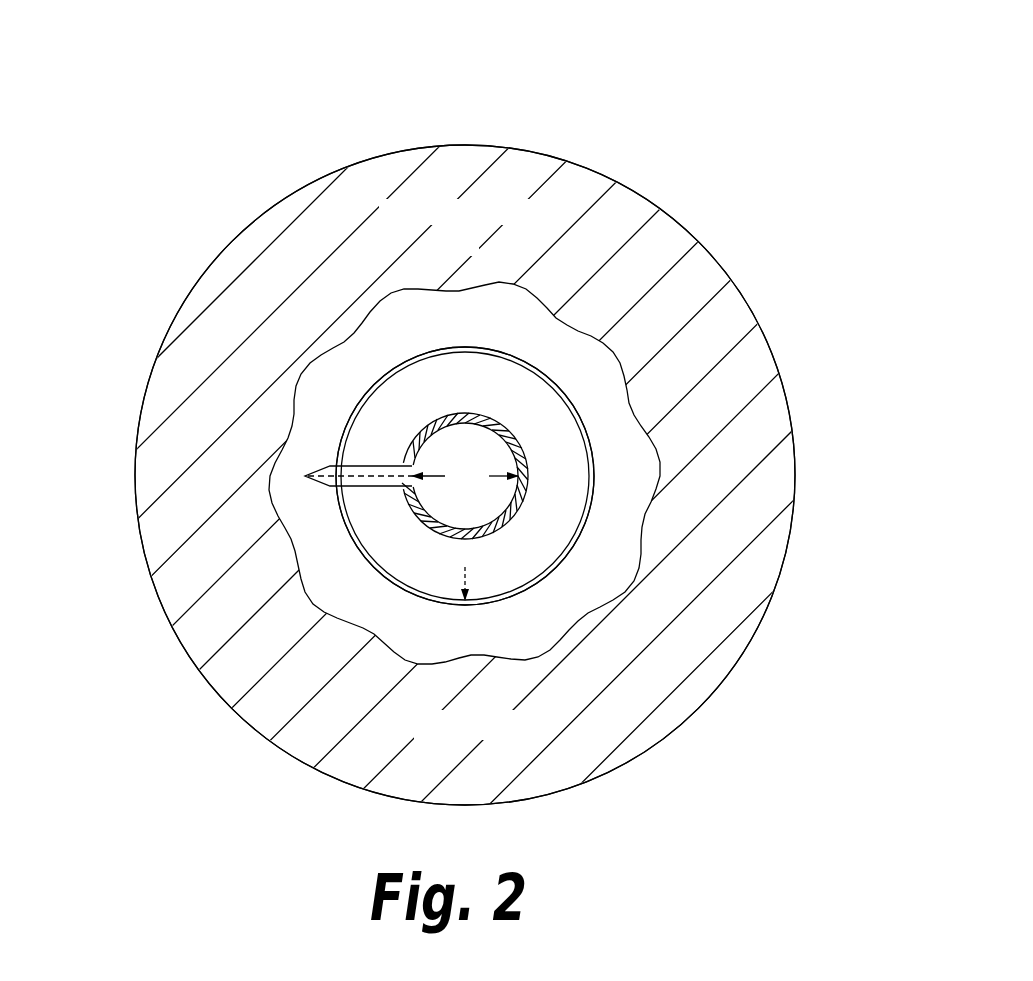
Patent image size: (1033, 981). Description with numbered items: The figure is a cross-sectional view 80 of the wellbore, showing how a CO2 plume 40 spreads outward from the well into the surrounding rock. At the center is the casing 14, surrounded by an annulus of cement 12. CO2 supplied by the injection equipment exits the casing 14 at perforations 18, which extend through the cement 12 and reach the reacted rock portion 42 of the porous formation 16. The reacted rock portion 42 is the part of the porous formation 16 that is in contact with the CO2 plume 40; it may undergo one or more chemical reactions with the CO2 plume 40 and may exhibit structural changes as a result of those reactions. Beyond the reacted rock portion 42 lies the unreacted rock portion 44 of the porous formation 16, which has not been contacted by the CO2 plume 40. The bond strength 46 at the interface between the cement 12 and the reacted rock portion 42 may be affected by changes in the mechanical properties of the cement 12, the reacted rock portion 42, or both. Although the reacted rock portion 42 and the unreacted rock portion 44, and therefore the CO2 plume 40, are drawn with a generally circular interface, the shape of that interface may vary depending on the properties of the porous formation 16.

The cross-sectional view 80 is at (195, 132).
The porous formation 16 is at (713, 335).
The unreacted rock portion 44 is at (477, 253).
The reacted rock portion 42 is at (554, 342).
The cement 12 is at (526, 398).
The casing 14 is at (530, 490).
The perforations 18 is at (380, 490).
The CO2 plume 40 is at (268, 499).
The bond strength 46 is at (563, 563).